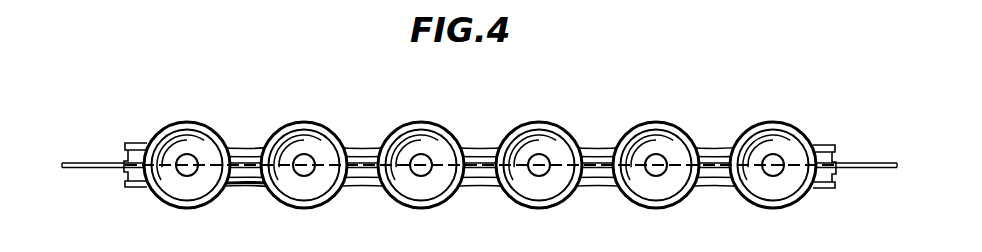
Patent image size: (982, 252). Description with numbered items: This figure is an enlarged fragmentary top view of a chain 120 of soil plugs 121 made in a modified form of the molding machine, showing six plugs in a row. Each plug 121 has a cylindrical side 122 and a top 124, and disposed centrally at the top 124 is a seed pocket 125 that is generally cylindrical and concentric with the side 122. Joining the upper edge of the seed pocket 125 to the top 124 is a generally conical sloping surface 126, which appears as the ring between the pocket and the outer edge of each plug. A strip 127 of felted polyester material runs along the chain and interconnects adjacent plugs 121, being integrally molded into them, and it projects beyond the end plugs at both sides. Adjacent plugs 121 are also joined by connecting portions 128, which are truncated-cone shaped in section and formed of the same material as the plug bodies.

The chain 120 is at (162, 88).
The soil plug 121 is at (516, 209).
The cylindrical side 122 is at (397, 203).
The top 124 is at (361, 157).
The seed pocket 125 is at (302, 159).
The conical sloping surface 126 is at (287, 187).
The strip of felted material 127 is at (72, 162).
The connecting portion 128 is at (136, 173).